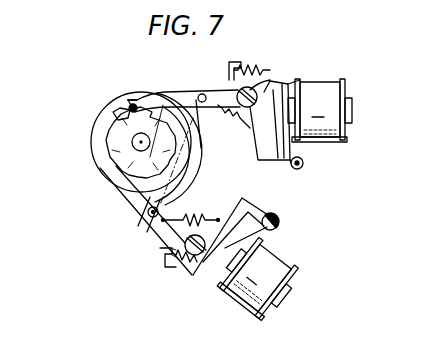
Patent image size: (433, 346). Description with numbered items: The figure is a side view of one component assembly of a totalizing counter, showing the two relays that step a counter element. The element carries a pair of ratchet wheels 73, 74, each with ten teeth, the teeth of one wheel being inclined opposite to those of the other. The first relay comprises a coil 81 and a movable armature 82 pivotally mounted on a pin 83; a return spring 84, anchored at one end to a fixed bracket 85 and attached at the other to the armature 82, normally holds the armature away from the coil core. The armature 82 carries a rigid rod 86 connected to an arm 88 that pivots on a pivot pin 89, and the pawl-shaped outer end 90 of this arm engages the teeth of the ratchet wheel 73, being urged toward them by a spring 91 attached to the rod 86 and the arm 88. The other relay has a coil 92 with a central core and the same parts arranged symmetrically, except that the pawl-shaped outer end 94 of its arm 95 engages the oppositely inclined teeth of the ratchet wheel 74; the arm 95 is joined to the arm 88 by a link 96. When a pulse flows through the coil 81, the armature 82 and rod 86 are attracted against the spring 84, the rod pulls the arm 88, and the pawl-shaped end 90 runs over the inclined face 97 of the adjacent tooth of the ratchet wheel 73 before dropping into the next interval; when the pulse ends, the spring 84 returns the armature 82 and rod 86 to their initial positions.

The ratchet wheel 73 is at (130, 106).
The ratchet wheel 74 is at (120, 133).
The coil 81 is at (320, 110).
The movable armature 82 is at (300, 80).
The pin 83 is at (303, 166).
The return spring 84 is at (258, 67).
The fixed bracket 85 is at (230, 65).
The rod 86 is at (260, 150).
The arm 88 is at (208, 93).
The pivot pin 89 is at (270, 80).
The pawl-shaped outer end 90 is at (146, 97).
The spring 91 is at (241, 114).
The coil 92 is at (248, 260).
The pawl-shaped outer end 94 is at (110, 175).
The arm 95 is at (158, 225).
The link 96 is at (224, 136).
The inclined face 97 is at (114, 113).